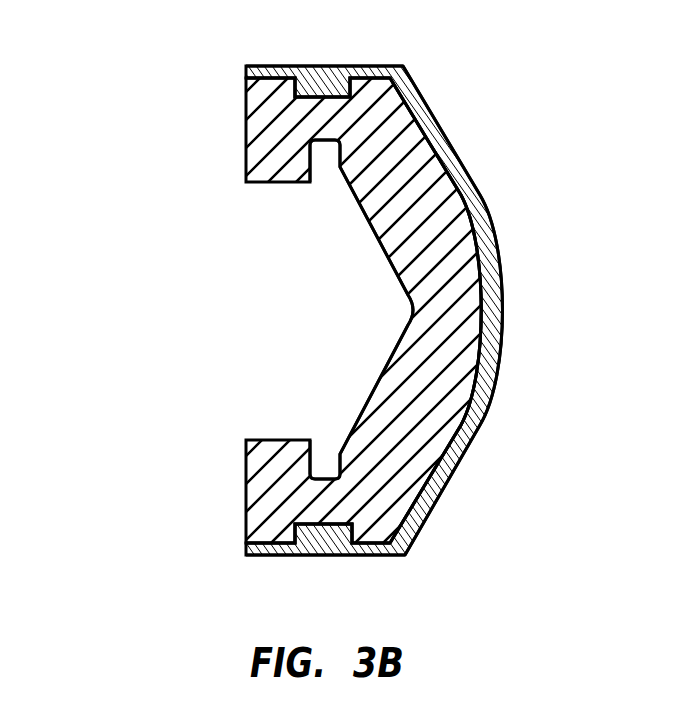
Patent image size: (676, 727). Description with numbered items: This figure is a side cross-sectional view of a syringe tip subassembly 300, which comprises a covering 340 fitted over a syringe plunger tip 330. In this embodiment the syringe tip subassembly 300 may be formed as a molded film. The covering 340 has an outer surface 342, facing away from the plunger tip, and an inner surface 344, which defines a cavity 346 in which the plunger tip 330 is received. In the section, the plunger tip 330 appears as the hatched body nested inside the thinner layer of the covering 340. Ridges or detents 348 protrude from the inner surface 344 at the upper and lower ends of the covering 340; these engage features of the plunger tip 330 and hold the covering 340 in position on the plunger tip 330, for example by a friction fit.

The syringe tip subassembly 300 is at (522, 142).
The syringe plunger tip 330 is at (397, 485).
The covering 340 is at (465, 431).
The outer surface 342 is at (483, 216).
The inner surface 344 is at (275, 82).
The cavity 346 is at (265, 282).
The ridges or detents 348 is at (303, 548).